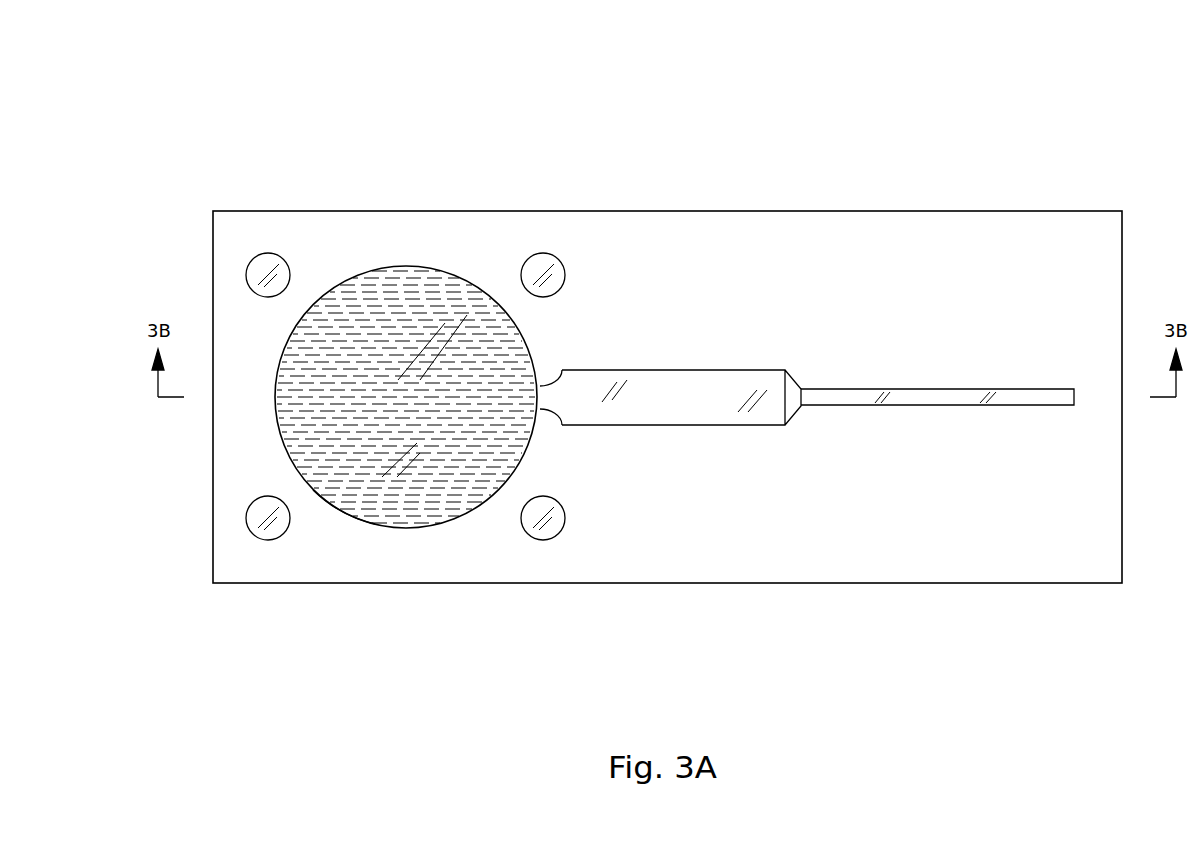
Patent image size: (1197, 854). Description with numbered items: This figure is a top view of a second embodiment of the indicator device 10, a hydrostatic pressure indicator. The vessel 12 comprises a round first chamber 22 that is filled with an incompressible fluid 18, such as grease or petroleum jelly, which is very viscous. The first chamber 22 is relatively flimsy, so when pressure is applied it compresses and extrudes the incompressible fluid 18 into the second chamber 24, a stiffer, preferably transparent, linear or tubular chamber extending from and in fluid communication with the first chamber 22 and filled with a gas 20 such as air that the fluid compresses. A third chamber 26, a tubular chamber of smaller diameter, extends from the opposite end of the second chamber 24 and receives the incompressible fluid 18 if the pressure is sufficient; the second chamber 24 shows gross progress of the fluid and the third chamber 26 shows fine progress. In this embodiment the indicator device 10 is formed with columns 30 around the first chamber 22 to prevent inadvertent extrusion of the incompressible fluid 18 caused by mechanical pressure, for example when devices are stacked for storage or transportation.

The indicator device 10 is at (219, 126).
The vessel 12 is at (582, 345).
The incompressible fluid 18 is at (378, 310).
The gas 20 is at (843, 396).
The first chamber 22 is at (338, 512).
The second chamber 24 is at (683, 369).
The third chamber 26 is at (935, 390).
The columns 30 is at (247, 275).